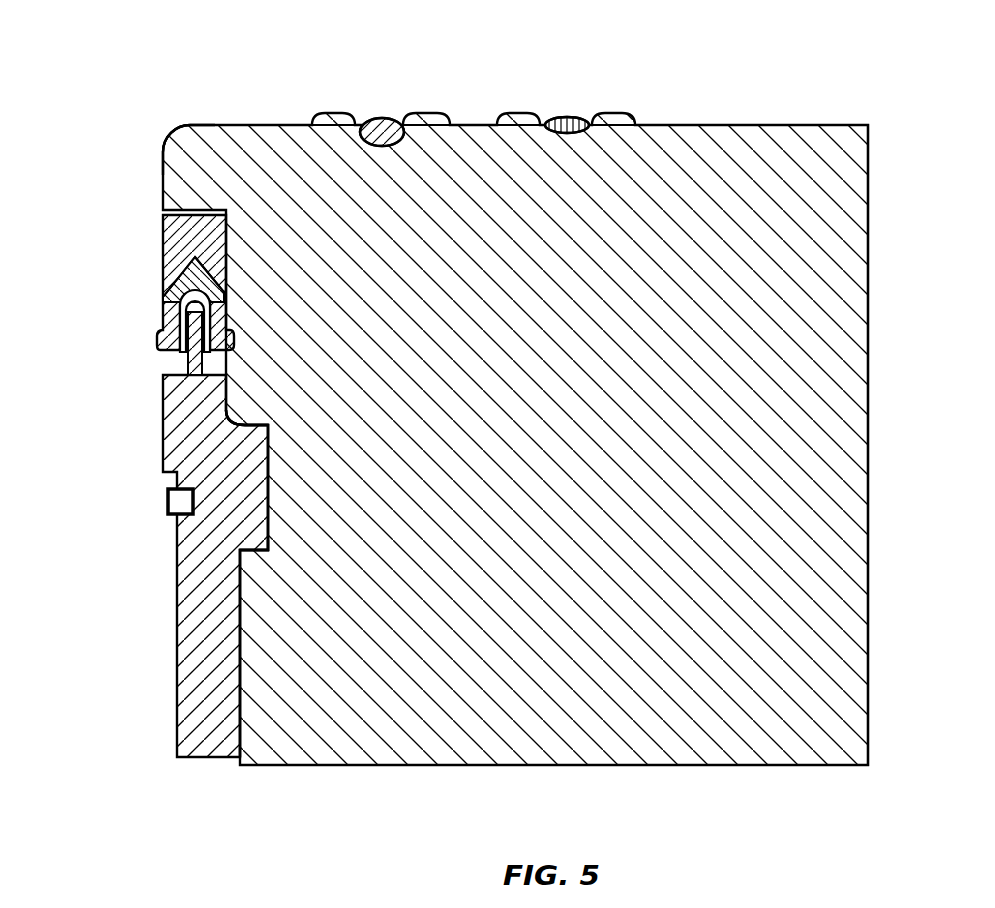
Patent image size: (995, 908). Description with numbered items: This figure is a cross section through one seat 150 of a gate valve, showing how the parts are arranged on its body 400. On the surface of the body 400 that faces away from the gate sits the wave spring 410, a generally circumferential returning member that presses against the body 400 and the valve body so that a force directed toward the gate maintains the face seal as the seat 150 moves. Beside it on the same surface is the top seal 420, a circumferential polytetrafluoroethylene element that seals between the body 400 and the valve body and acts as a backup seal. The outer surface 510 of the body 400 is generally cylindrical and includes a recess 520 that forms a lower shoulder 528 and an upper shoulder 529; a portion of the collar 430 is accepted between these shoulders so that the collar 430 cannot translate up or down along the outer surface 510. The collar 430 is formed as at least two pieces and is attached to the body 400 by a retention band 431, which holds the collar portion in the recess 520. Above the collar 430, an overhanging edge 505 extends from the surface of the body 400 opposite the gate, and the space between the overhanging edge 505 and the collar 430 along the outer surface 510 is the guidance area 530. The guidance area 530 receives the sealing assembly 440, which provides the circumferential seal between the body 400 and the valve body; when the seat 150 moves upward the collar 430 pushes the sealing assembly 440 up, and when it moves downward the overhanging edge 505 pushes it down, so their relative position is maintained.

The seat 150 is at (216, 70).
The body 400 is at (748, 152).
The wave spring 410 is at (383, 98).
The top seal 420 is at (568, 97).
The collar 430 is at (174, 774).
The retention band 431 is at (167, 500).
The sealing assembly 440 is at (125, 281).
The overhanging edge 505 is at (168, 124).
The outer surface 510 is at (254, 712).
The recess 520 is at (285, 471).
The lower shoulder 528 is at (249, 538).
The upper shoulder 529 is at (238, 442).
The guidance area 530 is at (240, 254).